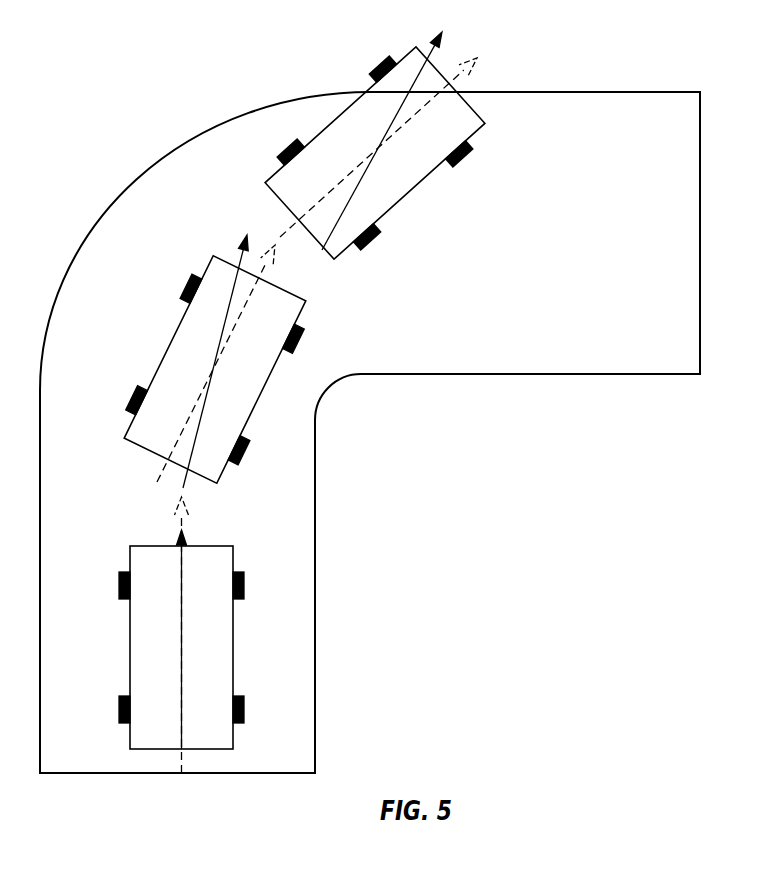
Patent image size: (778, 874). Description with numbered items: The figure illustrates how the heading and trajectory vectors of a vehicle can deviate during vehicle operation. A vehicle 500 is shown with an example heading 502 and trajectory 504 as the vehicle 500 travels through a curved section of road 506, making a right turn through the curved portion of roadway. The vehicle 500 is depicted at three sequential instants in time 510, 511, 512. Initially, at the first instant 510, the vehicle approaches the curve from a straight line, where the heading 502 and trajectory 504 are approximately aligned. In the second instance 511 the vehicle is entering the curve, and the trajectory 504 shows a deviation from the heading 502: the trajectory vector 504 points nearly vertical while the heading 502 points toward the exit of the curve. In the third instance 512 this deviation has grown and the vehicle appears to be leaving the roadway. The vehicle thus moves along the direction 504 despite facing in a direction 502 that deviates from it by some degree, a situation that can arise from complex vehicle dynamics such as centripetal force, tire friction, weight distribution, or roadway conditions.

The vehicle 500 is at (291, 394).
The heading 502 is at (181, 520).
The trajectory 504 is at (183, 565).
The road 506 is at (681, 137).
The first instant in time 510 is at (233, 655).
The second instant in time 511 is at (165, 353).
The third instant in time 512 is at (387, 213).